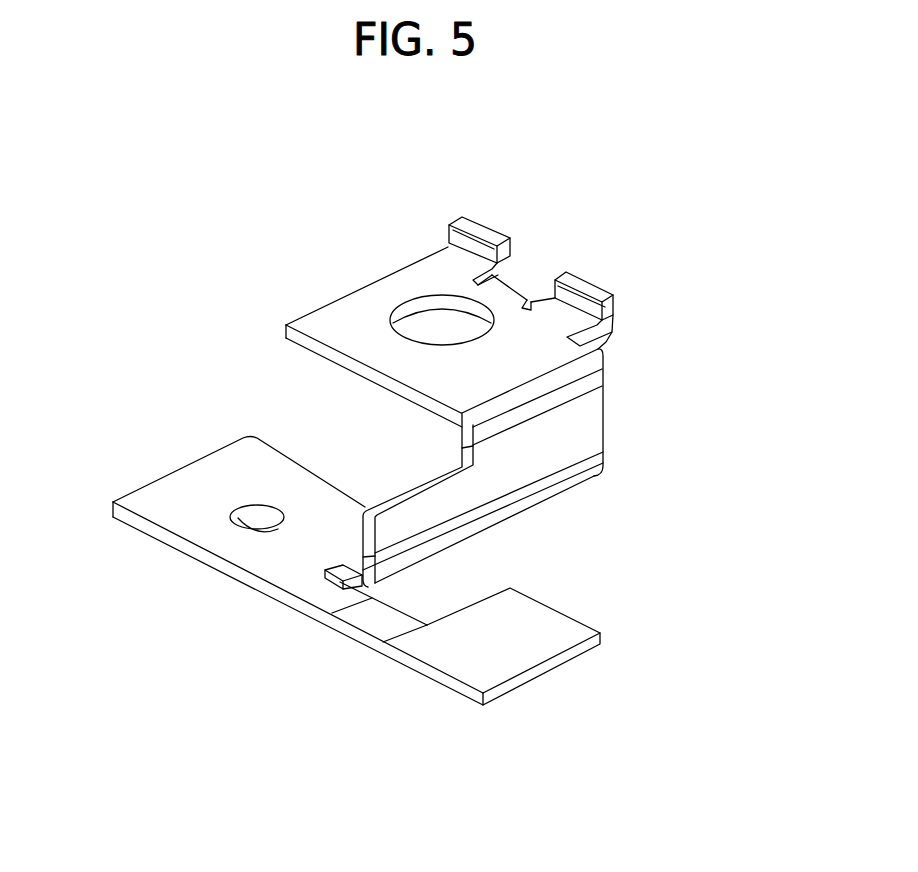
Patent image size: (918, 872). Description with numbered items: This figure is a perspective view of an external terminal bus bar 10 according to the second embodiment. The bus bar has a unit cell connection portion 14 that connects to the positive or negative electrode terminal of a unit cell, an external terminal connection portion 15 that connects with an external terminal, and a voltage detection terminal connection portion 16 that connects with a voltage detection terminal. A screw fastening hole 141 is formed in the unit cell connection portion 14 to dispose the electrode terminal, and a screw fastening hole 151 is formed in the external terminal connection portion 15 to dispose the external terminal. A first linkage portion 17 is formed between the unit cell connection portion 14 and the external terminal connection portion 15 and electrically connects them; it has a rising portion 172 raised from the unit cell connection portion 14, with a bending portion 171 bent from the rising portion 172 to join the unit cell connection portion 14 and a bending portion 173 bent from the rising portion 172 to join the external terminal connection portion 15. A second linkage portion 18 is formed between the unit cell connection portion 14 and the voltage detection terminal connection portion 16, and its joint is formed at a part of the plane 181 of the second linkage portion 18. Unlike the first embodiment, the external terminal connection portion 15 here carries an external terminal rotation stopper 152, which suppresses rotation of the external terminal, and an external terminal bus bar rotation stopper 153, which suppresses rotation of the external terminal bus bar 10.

The external terminal bus bar 10 is at (163, 312).
The unit cell connection portion 14 is at (188, 482).
The screw fastening hole 141 is at (252, 522).
The external terminal connection portion 15 is at (437, 262).
The screw fastening hole 151 is at (418, 323).
The external terminal rotation stopper 152 is at (579, 278).
The external terminal bus bar rotation stopper 153 is at (518, 302).
The voltage detection terminal connection portion 16 is at (523, 652).
The first linkage portion 17 is at (580, 437).
The bending portion 171 is at (513, 512).
The rising portion 172 is at (600, 408).
The bending portion 173 is at (598, 356).
The second linkage portion 18 is at (322, 598).
The plane 181 is at (371, 624).